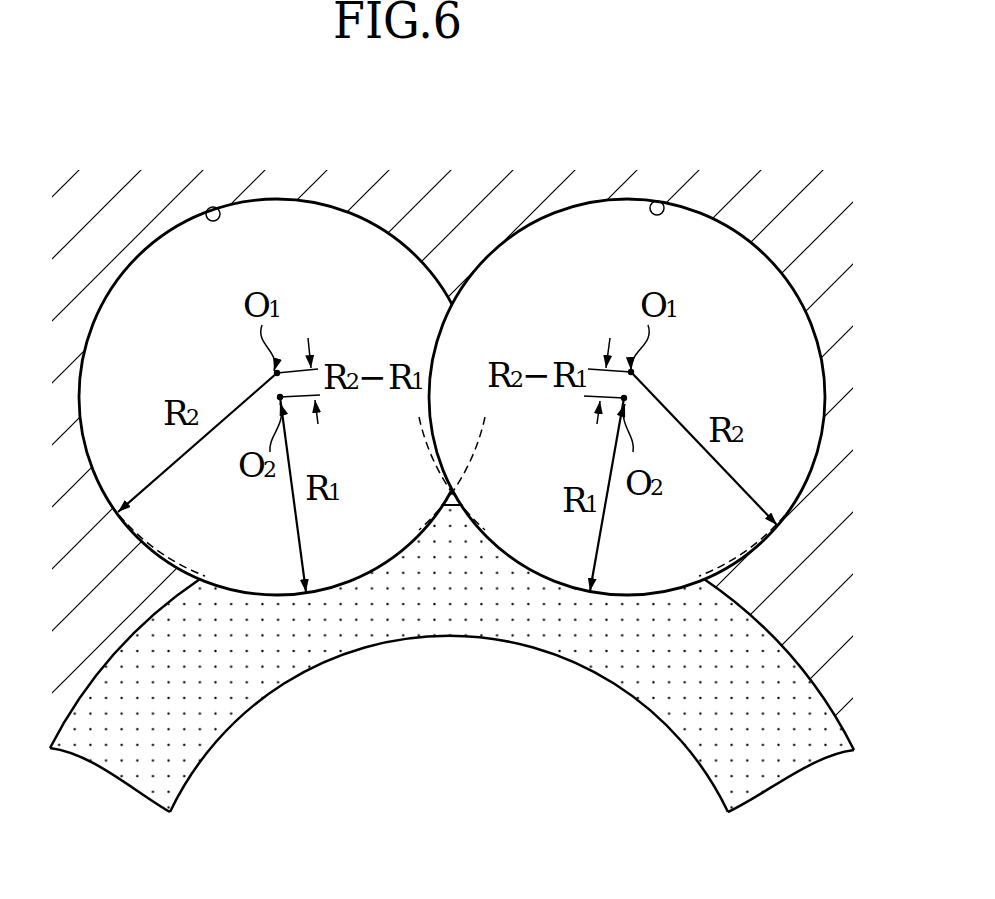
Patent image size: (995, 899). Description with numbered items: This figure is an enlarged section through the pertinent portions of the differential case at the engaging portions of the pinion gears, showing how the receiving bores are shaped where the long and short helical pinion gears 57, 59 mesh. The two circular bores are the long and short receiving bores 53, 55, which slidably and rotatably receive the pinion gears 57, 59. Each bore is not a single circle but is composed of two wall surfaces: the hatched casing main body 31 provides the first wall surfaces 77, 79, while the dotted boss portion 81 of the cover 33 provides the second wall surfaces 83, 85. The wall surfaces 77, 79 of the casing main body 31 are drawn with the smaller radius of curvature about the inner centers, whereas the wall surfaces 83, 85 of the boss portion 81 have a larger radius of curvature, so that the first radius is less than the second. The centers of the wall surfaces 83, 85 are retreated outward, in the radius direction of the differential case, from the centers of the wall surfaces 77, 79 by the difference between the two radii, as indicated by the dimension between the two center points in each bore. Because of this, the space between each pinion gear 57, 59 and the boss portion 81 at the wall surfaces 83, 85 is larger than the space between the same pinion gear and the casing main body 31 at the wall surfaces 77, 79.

The casing main body 31 is at (489, 167).
The cover 33 is at (427, 634).
The receiving bore 53 is at (788, 288).
The receiving bore 55 is at (129, 279).
The helical pinion gear 57 is at (627, 397).
The helical pinion gear 59 is at (277, 397).
The wall surface 77 is at (660, 203).
The wall surface 79 is at (211, 207).
The boss portion 81 is at (452, 658).
The wall surface 83 is at (702, 567).
The wall surface 85 is at (192, 562).